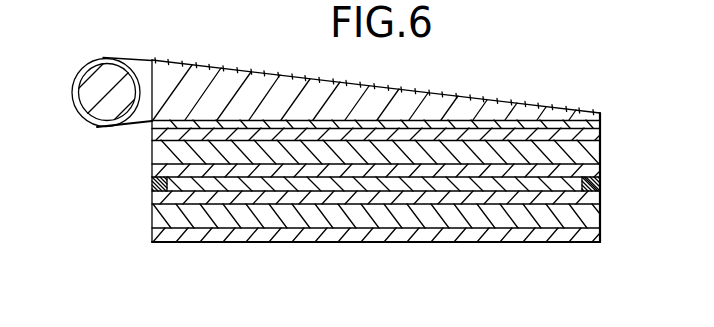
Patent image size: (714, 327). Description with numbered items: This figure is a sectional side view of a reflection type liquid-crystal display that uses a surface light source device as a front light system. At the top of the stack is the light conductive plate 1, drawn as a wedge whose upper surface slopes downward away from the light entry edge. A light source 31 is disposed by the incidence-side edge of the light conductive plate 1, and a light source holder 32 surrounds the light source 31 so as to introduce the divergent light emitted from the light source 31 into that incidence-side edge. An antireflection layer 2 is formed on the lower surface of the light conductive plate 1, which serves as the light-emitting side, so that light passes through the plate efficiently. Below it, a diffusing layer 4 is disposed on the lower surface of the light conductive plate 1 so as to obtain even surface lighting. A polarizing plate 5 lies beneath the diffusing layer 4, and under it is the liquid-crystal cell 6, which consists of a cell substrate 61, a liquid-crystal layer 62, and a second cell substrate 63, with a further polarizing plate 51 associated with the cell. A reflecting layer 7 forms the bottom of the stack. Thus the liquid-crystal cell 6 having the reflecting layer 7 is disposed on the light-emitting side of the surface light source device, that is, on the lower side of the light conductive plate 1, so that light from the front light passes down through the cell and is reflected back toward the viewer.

The light conductive plate 1 is at (462, 91).
The antireflection layer 2 is at (604, 123).
The diffusing layer 4 is at (603, 132).
The polarizing plate 5 is at (602, 153).
The liquid-crystal cell 6 is at (424, 211).
The cell substrate 61 is at (602, 171).
The liquid-crystal layer 62 is at (602, 198).
The cell substrate 63 is at (407, 231).
The reflecting layer 7 is at (510, 235).
The polarizing plate 51 is at (532, 217).
The light source 31 is at (93, 95).
The light source holder 32 is at (87, 63).